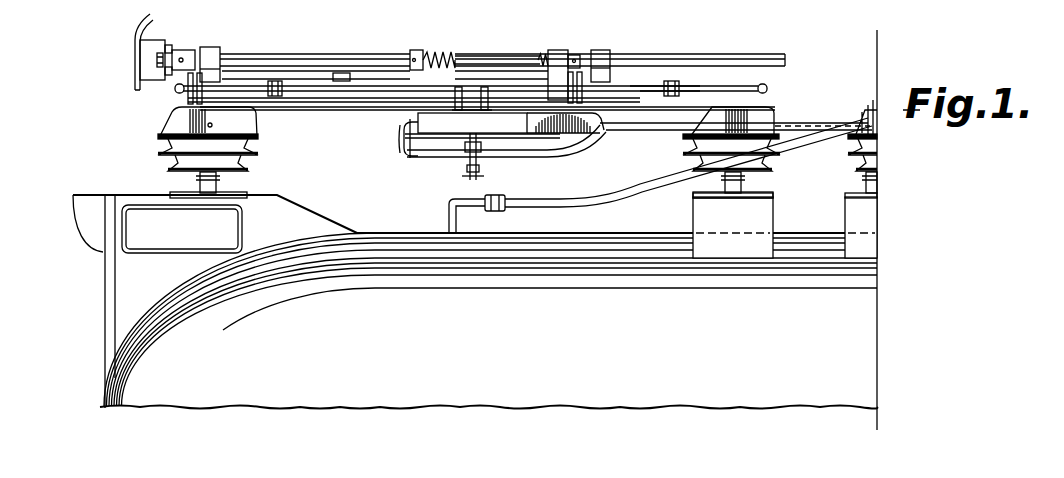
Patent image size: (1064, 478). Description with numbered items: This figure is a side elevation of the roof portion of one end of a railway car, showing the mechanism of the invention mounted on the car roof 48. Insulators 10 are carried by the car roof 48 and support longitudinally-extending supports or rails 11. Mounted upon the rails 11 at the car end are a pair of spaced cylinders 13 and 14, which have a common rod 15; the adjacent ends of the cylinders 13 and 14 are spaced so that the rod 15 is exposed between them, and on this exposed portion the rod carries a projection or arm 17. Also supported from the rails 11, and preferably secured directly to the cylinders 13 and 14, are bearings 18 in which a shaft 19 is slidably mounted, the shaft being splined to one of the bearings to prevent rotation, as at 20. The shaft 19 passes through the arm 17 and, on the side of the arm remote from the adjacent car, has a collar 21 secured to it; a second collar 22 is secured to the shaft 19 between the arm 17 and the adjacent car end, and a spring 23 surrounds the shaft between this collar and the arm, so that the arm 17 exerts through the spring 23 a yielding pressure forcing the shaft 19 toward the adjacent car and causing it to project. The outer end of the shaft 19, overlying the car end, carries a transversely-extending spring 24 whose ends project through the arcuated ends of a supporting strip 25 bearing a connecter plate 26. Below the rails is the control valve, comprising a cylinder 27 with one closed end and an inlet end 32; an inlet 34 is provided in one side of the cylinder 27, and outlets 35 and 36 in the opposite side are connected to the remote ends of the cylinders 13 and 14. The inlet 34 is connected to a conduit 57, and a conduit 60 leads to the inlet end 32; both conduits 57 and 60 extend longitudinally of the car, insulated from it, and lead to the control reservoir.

The insulators 10 is at (175, 132).
The rails 11 is at (343, 127).
The cylinder 13 is at (655, 83).
The cylinder 14 is at (294, 80).
The rod 15 is at (396, 83).
The arm 17 is at (560, 57).
The bearings 18 is at (212, 52).
The shaft 19 is at (271, 62).
The spline 20 is at (640, 80).
The collar 21 is at (581, 58).
The second collar 22 is at (431, 54).
The spring 23 is at (450, 58).
The transversely-extending spring 24 is at (162, 67).
The supporting strip 25 is at (146, 67).
The connecter plate 26 is at (138, 46).
The cylinder 27 is at (511, 123).
The inlet end 32 is at (402, 125).
The inlet 34 is at (480, 141).
The outlet 35 is at (487, 88).
The outlet 36 is at (455, 90).
The car roof 48 is at (552, 331).
The conduit 57 is at (570, 150).
The conduits 60 is at (518, 158).